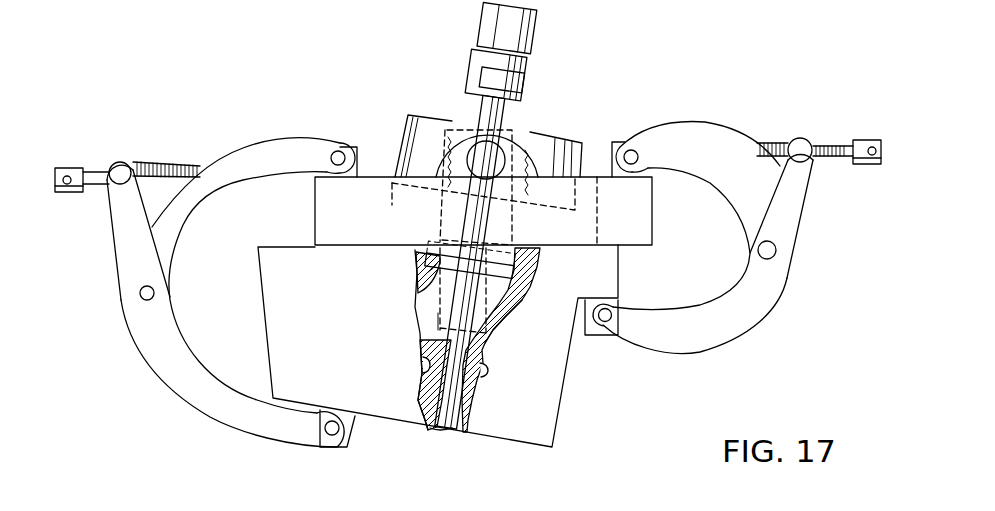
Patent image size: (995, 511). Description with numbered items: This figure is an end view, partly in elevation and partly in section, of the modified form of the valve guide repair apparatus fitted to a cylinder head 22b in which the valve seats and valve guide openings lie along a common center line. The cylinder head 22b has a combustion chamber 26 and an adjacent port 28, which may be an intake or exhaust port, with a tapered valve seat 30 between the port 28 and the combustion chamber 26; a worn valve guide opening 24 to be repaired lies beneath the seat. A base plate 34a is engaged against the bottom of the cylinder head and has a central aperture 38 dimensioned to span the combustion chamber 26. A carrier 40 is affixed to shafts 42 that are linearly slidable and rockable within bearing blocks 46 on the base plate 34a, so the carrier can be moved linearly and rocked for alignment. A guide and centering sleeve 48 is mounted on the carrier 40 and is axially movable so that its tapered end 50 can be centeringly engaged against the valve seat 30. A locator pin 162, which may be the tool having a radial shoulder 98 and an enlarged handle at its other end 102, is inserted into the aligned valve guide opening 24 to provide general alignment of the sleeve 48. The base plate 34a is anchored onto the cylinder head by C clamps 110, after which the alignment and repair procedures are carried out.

The other end of tool 102 is at (535, 45).
The bearing blocks 46 is at (460, 118).
The carrier 40 is at (565, 152).
The shafts 42 is at (508, 170).
The guide and centering sleeve 48 is at (440, 212).
The central aperture 38 is at (372, 220).
The base plate 34a is at (652, 230).
The combustion chamber 26 is at (535, 262).
The tapered valve seat 30 is at (518, 282).
The tapered end 50 is at (416, 296).
The radial shoulder 98 is at (438, 313).
The port 28 is at (495, 320).
The locator pin 162 is at (462, 386).
The cylinder head 22b is at (563, 397).
The valve guide opening 24 is at (432, 428).
The C clamp 110 is at (160, 370).